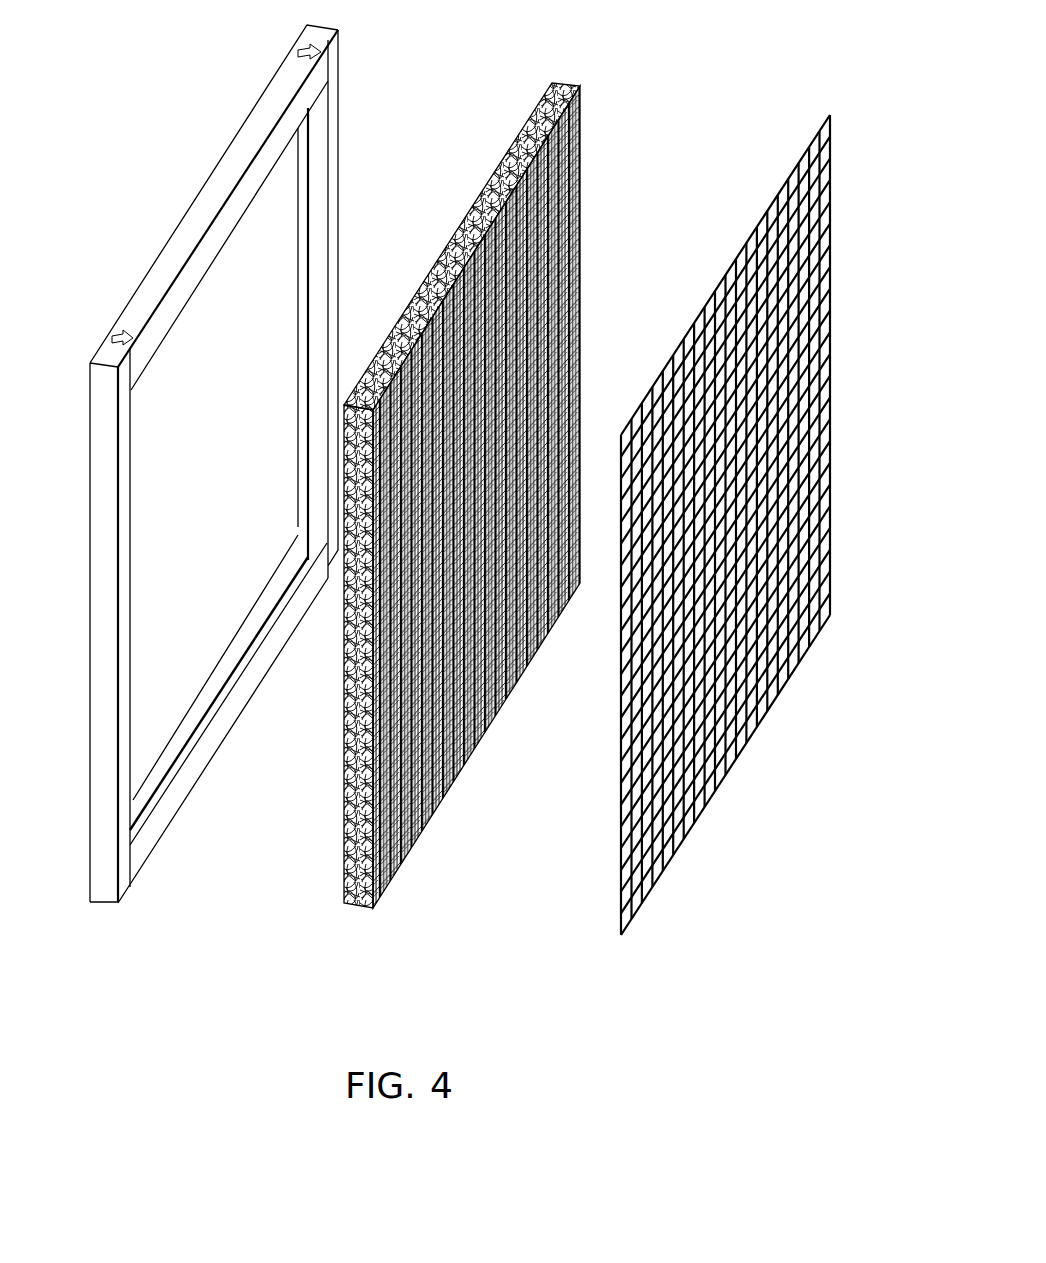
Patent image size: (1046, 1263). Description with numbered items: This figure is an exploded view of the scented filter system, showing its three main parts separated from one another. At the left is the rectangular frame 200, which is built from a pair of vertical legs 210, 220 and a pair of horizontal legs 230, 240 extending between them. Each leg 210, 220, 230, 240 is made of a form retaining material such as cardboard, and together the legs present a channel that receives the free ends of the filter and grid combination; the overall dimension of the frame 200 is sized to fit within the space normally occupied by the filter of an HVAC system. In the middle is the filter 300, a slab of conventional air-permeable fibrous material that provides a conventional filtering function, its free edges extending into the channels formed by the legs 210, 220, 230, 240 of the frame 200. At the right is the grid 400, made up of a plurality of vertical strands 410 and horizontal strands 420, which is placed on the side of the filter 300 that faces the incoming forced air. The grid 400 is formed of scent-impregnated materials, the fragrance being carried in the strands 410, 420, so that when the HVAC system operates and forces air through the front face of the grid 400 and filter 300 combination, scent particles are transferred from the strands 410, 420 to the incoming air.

The rectangular frame 200 is at (250, 522).
The vertical leg 210 is at (105, 380).
The vertical leg 220 is at (336, 180).
The horizontal leg 230 is at (197, 197).
The horizontal leg 240 is at (158, 833).
The filter 300 is at (400, 870).
The grid 400 is at (733, 541).
The vertical strands 410 is at (621, 797).
The horizontal strands 420 is at (830, 330).